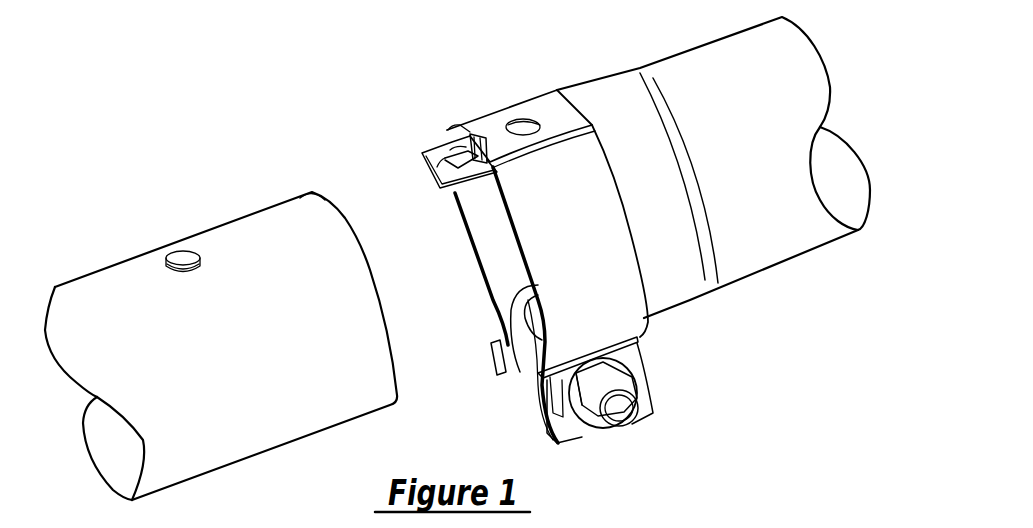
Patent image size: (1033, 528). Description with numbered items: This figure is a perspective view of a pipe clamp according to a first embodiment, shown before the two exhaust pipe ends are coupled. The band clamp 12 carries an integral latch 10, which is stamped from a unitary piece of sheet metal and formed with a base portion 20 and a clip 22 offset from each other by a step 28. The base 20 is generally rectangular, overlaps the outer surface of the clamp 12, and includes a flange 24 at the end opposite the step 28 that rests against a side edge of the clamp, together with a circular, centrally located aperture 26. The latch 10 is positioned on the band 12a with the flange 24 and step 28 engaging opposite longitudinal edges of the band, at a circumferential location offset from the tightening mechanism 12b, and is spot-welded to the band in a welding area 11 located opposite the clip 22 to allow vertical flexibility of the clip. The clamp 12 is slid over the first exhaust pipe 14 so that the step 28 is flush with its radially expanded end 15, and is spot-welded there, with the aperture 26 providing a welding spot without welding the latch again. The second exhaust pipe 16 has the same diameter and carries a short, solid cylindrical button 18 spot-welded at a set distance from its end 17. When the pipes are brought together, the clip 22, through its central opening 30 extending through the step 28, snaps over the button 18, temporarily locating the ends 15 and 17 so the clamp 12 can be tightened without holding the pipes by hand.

The latch 10 is at (462, 118).
The welding area 11 is at (553, 113).
The band clamp 12 is at (523, 370).
The band 12a is at (523, 368).
The tightening mechanism 12b is at (655, 418).
The first exhaust pipe 14 is at (675, 267).
The end of first exhaust pipe 15 is at (575, 305).
The second exhaust pipe 16 is at (287, 282).
The end of second exhaust pipe 17 is at (353, 230).
The button 18 is at (183, 257).
The base portion 20 is at (495, 113).
The clip 22 is at (427, 150).
The flange 24 is at (592, 103).
The aperture 26 is at (450, 202).
The step 28 is at (462, 140).
The opening 30 is at (437, 195).